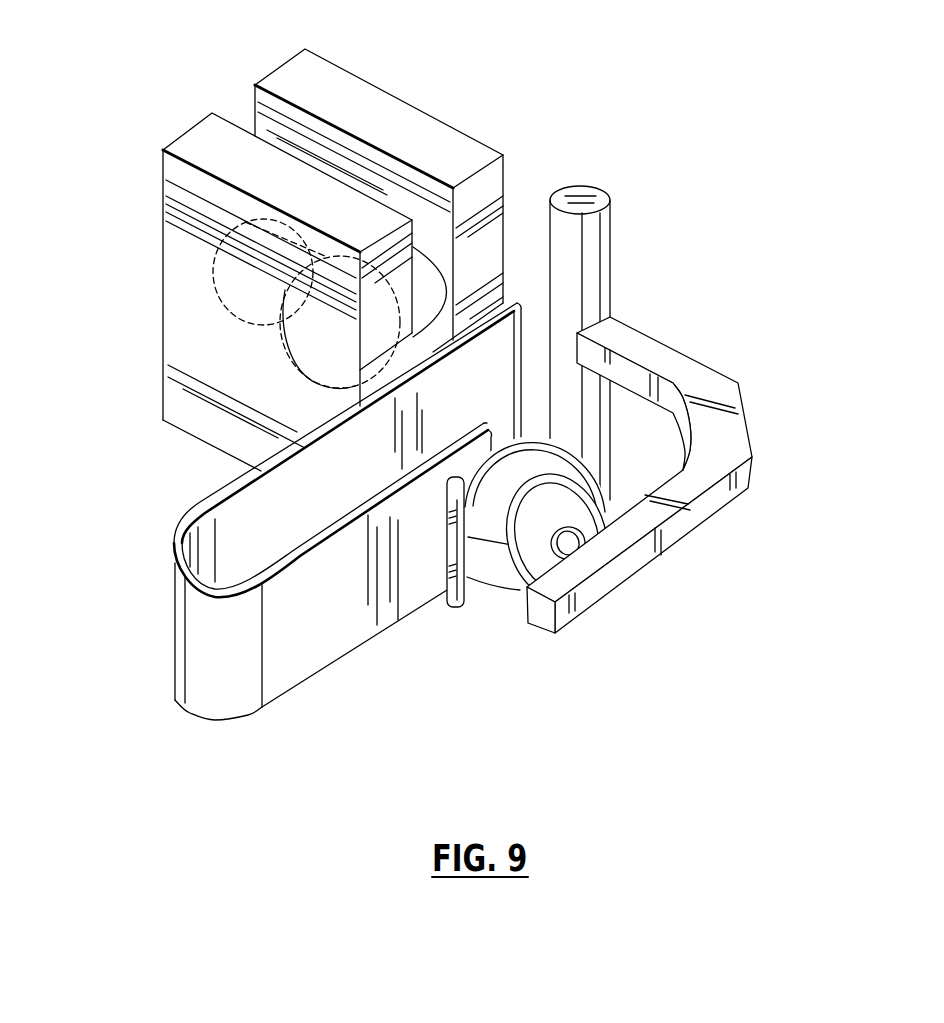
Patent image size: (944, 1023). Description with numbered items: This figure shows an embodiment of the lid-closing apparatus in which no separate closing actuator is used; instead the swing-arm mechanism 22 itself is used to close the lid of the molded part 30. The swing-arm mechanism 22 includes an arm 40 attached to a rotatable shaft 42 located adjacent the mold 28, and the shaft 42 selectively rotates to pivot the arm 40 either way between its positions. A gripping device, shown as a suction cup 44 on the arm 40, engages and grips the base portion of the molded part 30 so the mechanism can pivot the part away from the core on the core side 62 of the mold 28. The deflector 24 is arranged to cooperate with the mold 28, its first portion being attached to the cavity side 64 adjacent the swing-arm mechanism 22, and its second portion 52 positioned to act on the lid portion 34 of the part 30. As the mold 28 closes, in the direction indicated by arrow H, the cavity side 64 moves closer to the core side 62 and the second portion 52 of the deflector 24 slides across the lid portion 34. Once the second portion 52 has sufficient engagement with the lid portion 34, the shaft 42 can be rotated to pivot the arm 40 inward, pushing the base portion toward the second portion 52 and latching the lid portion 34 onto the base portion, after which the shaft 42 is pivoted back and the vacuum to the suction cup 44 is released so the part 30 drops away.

The swing-arm mechanism 22 is at (637, 435).
The deflector 24 is at (347, 558).
The mold 28 is at (364, 246).
The molded part 30 is at (553, 520).
The lid portion 34 is at (508, 440).
The arm 40 is at (747, 426).
The rotatable shaft 42 is at (611, 282).
The suction cup 44 is at (585, 545).
The second portion 52 is at (273, 737).
The core side 62 is at (367, 78).
The cavity side 64 is at (183, 130).
The arrow H is at (168, 476).